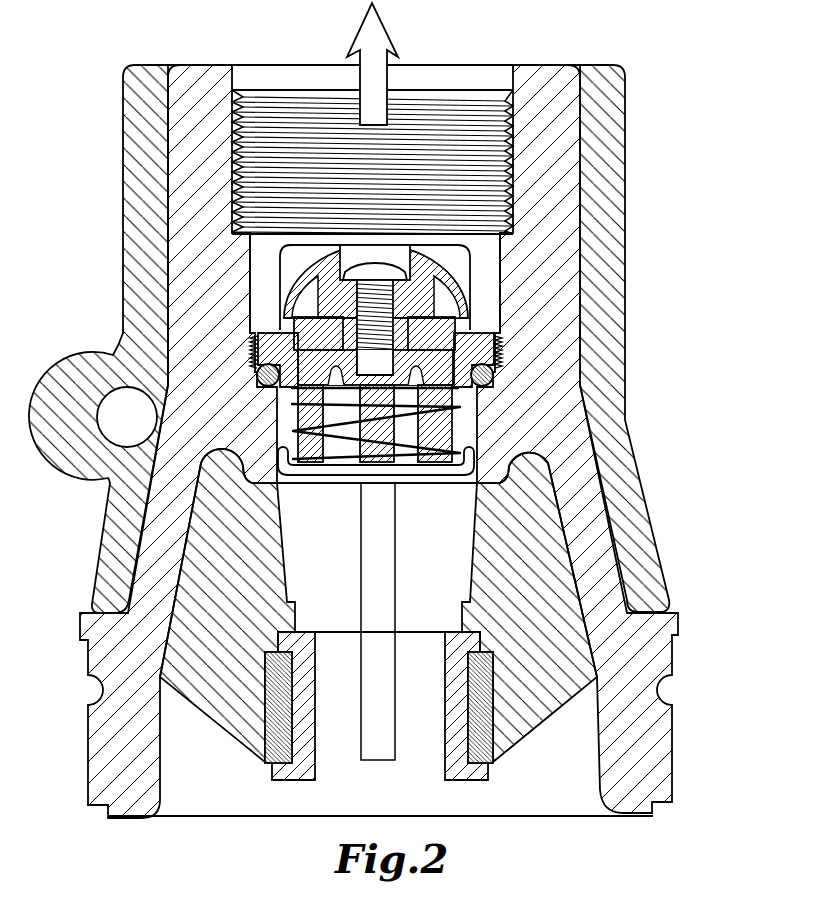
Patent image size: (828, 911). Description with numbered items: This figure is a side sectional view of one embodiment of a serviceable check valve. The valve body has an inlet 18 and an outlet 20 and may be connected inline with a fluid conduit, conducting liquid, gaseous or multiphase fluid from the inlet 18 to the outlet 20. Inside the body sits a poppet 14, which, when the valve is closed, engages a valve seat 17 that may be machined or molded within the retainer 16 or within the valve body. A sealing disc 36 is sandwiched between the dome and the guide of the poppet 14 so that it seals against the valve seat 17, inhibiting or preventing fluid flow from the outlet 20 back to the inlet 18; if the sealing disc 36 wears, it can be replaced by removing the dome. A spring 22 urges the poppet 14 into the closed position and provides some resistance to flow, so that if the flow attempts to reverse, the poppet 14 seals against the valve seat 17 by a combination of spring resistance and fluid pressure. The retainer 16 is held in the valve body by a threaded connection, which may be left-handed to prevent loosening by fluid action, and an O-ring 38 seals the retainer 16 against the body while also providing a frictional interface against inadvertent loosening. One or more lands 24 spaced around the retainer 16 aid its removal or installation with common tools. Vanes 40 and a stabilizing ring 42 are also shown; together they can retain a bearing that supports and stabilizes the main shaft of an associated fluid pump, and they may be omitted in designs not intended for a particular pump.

The poppet 14 is at (438, 262).
The retainer 16 is at (497, 352).
The valve seat 17 is at (488, 374).
The inlet 18 is at (244, 842).
The outlet 20 is at (469, 41).
The spring 22 is at (350, 466).
The lands 24 is at (470, 330).
The sealing disc 36 is at (294, 331).
The O-ring 38 is at (479, 386).
The vanes 40 is at (243, 738).
The stabilizing ring 42 is at (350, 600).